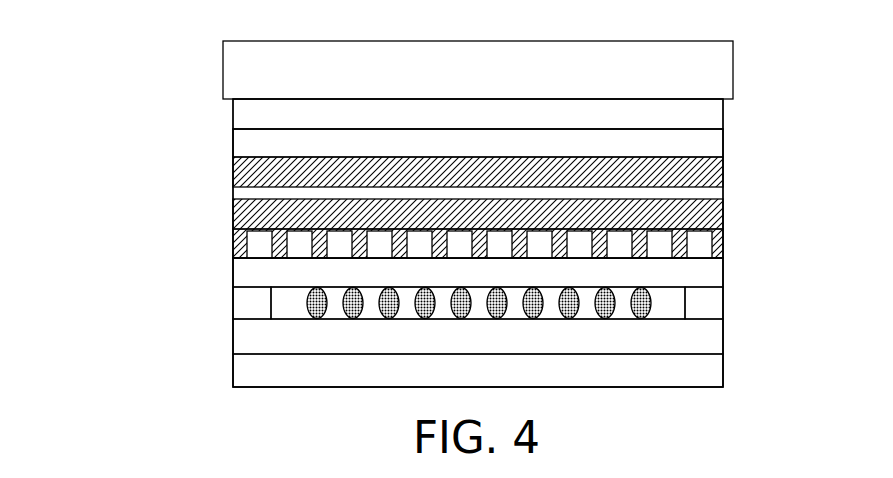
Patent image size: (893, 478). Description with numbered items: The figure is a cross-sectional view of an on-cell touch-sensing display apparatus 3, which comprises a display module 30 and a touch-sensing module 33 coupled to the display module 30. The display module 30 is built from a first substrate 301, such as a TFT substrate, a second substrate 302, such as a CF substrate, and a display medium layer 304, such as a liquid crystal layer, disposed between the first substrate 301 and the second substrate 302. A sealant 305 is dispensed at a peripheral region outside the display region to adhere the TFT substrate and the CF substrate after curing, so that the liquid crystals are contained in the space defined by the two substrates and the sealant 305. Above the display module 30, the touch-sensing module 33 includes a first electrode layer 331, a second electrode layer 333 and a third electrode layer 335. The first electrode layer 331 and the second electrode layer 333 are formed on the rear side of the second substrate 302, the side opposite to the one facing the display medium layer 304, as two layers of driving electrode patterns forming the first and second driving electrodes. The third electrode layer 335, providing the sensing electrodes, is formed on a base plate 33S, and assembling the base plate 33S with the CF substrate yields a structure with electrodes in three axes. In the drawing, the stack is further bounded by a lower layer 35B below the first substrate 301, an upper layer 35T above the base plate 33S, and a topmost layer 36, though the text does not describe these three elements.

The display apparatus 3 is at (74, 28).
The cover layer 36 is at (710, 71).
The top polarizer 35T is at (713, 115).
The touch-sensing module 33 is at (171, 135).
The base plate 33S is at (244, 143).
The third electrode layer 335 is at (239, 171).
The first electrode layer 331 is at (239, 215).
The second electrode layer 333 is at (238, 249).
The display module 30 is at (171, 265).
The second substrate 302 is at (244, 270).
The sealant 305 is at (254, 305).
The display medium layer 304 is at (287, 309).
The first substrate 301 is at (248, 348).
The bottom polarizer 35B is at (712, 374).